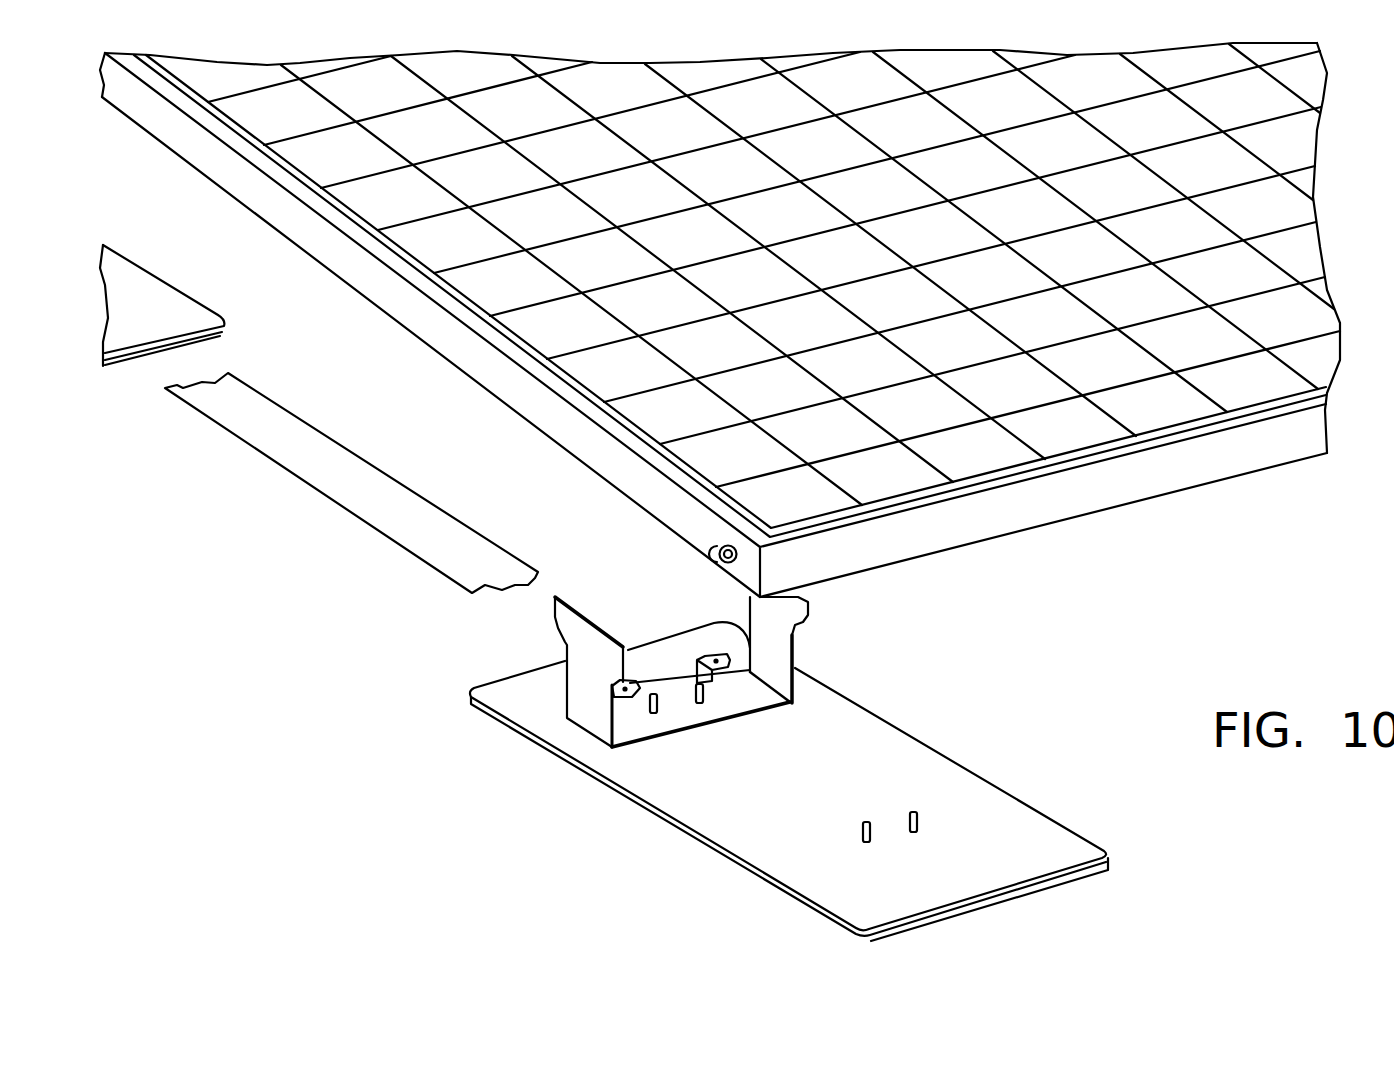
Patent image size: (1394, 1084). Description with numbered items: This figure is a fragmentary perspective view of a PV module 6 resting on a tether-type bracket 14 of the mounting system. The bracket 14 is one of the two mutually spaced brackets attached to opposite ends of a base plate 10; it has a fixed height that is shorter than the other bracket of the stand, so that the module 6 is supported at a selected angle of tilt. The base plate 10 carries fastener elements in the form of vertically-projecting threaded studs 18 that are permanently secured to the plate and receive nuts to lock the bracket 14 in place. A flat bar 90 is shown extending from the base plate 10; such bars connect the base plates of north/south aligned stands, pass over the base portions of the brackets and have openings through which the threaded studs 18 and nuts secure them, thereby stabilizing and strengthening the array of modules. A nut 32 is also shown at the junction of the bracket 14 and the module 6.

The PV module 6 is at (1021, 541).
The base plate 10 is at (172, 300).
The bracket 14 is at (802, 662).
The threaded stud 18 is at (699, 704).
The nut 32 is at (710, 558).
The flat bar 90 is at (306, 462).